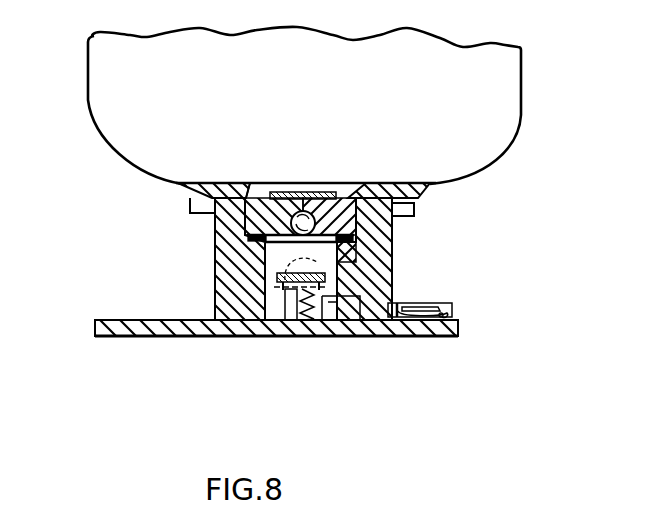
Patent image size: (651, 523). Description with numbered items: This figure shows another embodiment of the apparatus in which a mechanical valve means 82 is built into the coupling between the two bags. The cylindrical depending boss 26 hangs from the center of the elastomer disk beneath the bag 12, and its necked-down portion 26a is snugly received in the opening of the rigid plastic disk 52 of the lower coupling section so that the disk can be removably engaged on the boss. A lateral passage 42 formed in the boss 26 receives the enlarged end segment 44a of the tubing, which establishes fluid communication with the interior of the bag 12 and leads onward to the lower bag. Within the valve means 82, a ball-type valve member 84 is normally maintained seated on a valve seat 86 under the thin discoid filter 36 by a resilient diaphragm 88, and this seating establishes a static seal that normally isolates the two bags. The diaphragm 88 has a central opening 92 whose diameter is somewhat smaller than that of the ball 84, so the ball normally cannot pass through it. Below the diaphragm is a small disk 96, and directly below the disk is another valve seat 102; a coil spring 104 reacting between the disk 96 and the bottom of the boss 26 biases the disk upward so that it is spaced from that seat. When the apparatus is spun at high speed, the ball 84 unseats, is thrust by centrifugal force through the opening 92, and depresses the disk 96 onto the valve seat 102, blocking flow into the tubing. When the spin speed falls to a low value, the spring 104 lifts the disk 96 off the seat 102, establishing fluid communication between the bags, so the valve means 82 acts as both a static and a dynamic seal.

The bag 12 is at (522, 79).
The valve means 82 is at (95, 218).
The boss 26 is at (220, 264).
The necked-down portion 26a is at (348, 338).
The filter 36 is at (289, 185).
The lateral passage 42 is at (394, 322).
The enlarged end segment 44a is at (424, 300).
The disk 52 is at (100, 320).
The ball-type valve member 84 is at (278, 280).
The valve seat 86 is at (324, 189).
The resilient diaphragm 88 is at (260, 184).
The central opening 92 is at (374, 256).
The disk 96 is at (276, 287).
The valve seat 102 is at (328, 337).
The coil spring 104 is at (268, 335).